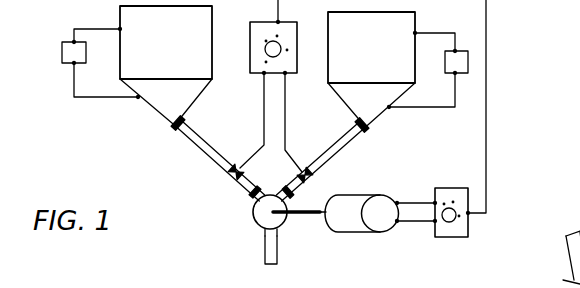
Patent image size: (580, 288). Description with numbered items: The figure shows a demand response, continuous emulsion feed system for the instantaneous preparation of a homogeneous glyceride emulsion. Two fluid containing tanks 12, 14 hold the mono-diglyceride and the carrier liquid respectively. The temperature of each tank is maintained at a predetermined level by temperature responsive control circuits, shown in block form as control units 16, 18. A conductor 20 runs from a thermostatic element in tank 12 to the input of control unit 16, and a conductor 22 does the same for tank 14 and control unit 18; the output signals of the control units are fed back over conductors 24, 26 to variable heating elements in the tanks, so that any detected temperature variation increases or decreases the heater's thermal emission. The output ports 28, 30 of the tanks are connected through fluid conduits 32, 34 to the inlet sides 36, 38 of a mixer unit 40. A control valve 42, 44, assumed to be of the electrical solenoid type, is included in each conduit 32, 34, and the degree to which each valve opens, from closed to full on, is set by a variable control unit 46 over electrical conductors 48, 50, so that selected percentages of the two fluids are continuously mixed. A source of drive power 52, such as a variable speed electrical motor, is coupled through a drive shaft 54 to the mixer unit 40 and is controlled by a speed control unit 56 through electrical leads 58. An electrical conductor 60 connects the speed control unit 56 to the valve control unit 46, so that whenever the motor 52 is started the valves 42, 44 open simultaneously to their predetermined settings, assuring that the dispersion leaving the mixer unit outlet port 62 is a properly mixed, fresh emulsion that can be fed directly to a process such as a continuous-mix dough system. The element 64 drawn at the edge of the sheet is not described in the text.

The fluid containing tank 12 is at (150, 49).
The fluid containing tank 14 is at (357, 53).
The temperature control circuit 16 is at (62, 53).
The temperature control circuit 18 is at (469, 61).
The electrical conductor 20 is at (101, 29).
The electrical conductor 22 is at (434, 32).
The electrical conductor 24 is at (93, 99).
The electrical conductor 26 is at (438, 108).
The output port 28 is at (172, 129).
The output port 30 is at (370, 129).
The fluid conduit 32 is at (197, 151).
The fluid conduit 34 is at (345, 151).
The inlet side of mixer unit 36 is at (254, 206).
The inlet side of mixer unit 38 is at (298, 215).
The mixer unit 40 is at (262, 229).
The control valve 42 is at (230, 178).
The control valve 44 is at (316, 182).
The variable control unit 46 is at (257, 23).
The electrical conductor 48 is at (264, 106).
The electrical conductor 50 is at (285, 106).
The source of drive power 52 is at (366, 234).
The drive shaft 54 is at (326, 216).
The motor speed control unit 56 is at (456, 189).
The electrical leads 58 is at (417, 205).
The electrical conductor 60 is at (487, 90).
The mixer unit outlet port 62 is at (268, 262).
The container 64 is at (566, 250).